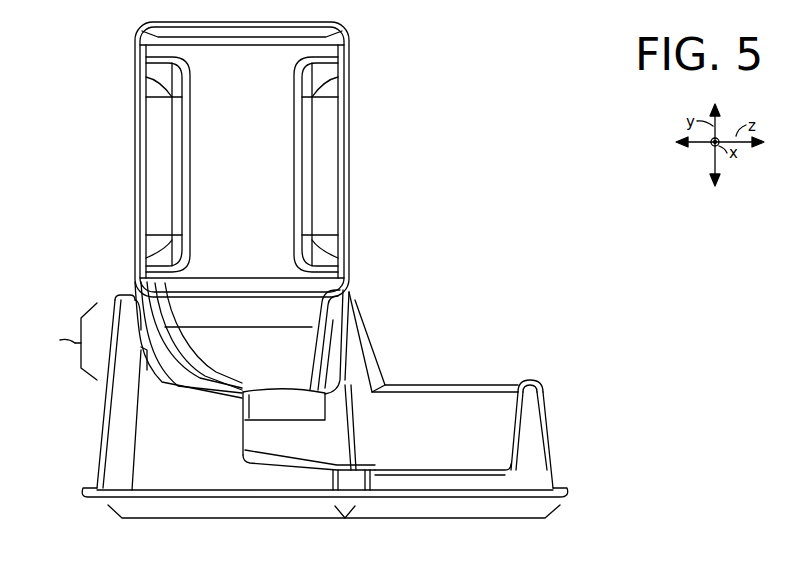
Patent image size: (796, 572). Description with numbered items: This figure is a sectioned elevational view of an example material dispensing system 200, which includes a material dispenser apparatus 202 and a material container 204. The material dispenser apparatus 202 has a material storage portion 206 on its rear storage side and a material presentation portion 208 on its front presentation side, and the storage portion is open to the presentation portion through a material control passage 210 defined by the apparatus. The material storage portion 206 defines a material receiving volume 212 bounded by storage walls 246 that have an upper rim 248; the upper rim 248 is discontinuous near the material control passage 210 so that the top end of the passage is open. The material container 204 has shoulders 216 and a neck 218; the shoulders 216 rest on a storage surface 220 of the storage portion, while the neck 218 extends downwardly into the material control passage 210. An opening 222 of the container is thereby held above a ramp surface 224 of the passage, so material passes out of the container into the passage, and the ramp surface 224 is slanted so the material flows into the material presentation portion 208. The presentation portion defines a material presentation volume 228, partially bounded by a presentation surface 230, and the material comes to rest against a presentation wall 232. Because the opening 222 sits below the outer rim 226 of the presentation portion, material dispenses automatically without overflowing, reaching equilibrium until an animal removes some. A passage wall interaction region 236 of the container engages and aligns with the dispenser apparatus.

The material dispensing system 200 is at (408, 212).
The material dispenser apparatus 202 is at (552, 410).
The material container 204 is at (257, 178).
The material storage portion 206 is at (240, 522).
The material presentation portion 208 is at (462, 520).
The material control passage 210 is at (347, 450).
The material receiving volume 212 is at (76, 394).
The shoulders 216 is at (218, 380).
The neck 218 is at (302, 416).
The storage surface 220 is at (222, 396).
The opening 222 is at (296, 428).
The ramp surface 224 is at (262, 470).
The outer rim 226 is at (532, 380).
The material presentation volume 228 is at (420, 433).
The presentation surface 230 is at (415, 468).
The presentation wall 232 is at (513, 412).
The passage wall interaction region 236 is at (316, 346).
The storage walls 246 is at (141, 350).
The upper rim 248 is at (124, 296).